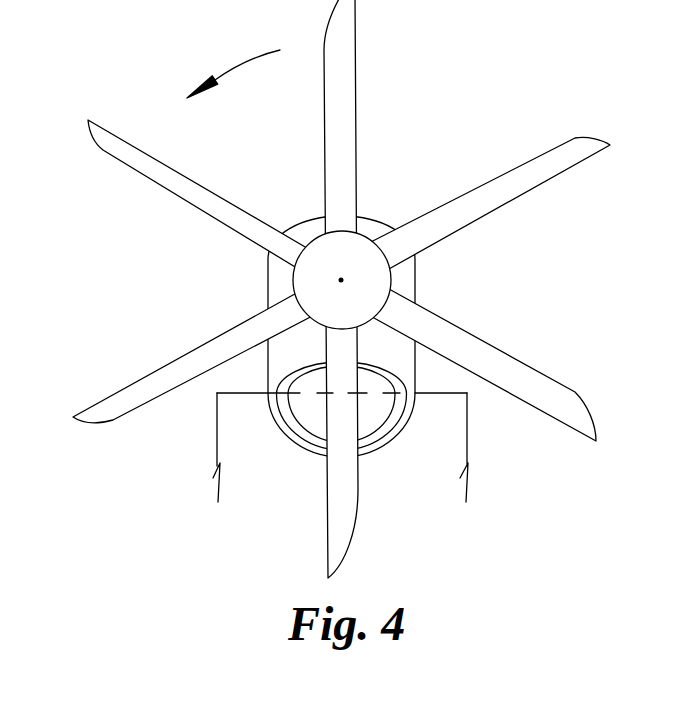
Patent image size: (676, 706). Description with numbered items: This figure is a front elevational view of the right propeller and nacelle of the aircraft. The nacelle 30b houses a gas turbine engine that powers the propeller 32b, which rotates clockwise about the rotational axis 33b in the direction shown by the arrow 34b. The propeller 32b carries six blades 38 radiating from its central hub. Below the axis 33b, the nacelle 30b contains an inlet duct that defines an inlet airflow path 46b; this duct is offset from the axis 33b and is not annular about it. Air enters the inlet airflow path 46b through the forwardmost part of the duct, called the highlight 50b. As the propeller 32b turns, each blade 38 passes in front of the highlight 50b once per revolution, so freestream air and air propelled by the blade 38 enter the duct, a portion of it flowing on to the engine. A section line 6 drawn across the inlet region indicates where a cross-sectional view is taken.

The nacelle 30b is at (335, 289).
The propeller 32b is at (365, 268).
The axis 33b is at (341, 280).
The arrow 34b is at (243, 60).
The blade 38 is at (117, 152).
The inlet airflow path 46b is at (308, 412).
The highlight 50b is at (313, 362).
The section line 6 is at (341, 467).